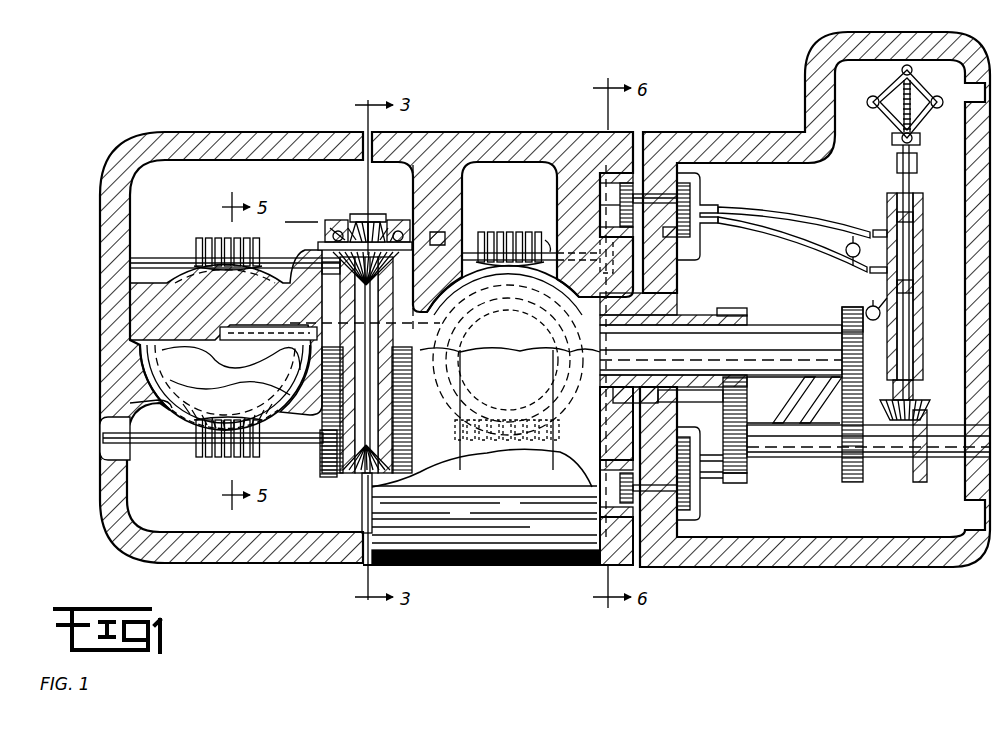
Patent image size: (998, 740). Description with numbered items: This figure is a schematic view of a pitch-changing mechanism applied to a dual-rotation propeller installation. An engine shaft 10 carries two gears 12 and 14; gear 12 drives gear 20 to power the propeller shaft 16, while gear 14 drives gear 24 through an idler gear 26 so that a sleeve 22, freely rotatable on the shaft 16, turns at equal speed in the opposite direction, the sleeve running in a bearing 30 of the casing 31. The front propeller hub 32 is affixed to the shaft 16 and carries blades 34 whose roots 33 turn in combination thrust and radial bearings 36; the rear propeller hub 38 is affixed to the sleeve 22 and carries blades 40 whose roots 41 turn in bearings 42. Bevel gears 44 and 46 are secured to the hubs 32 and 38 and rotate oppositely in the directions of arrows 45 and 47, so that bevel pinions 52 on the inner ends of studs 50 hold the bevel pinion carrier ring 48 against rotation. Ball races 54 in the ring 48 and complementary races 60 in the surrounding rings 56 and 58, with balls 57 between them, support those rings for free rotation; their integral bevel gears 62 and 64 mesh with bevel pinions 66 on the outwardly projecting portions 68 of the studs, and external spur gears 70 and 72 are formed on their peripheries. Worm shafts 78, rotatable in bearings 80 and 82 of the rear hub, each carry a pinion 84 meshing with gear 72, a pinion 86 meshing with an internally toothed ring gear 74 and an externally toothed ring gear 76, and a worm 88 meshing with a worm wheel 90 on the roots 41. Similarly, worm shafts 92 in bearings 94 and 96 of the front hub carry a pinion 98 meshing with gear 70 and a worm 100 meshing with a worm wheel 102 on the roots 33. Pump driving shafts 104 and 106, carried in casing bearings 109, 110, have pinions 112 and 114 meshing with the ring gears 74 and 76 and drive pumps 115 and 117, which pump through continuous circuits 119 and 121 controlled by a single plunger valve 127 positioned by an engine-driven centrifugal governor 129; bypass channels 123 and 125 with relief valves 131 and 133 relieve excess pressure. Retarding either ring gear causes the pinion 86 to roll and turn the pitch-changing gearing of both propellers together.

The engine shaft 10 is at (925, 465).
The gear 12 is at (850, 482).
The gear 14 is at (738, 475).
The propeller shaft 16 is at (788, 328).
The gear 20 is at (850, 308).
The sleeve 22 is at (737, 315).
The gear 24 is at (748, 312).
The idler gear 26 is at (748, 395).
The bearing 30 is at (677, 298).
The casing 31 is at (810, 567).
The front propeller hub 32 is at (229, 134).
The roots 33 is at (163, 356).
The blades 34 is at (232, 381).
The combination thrust and radial bearings 36 is at (170, 418).
The rear propeller hub 38 is at (540, 133).
The blades 40 is at (525, 380).
The roots 41 is at (524, 400).
The combination thrust and radial bearings 42 is at (450, 415).
The bevel gear 44 is at (366, 392).
The arrow 45 is at (286, 148).
The bevel gear 46 is at (366, 365).
The arrow 47 is at (495, 150).
The bevel pinion carrier ring 48 is at (325, 248).
The studs 50 is at (362, 225).
The bevel pinions 52 is at (340, 270).
The ball races 54 is at (333, 238).
The ring 56 is at (335, 235).
The balls 57 is at (333, 230).
The ring 58 is at (435, 235).
The ball race 60 is at (350, 222).
The bevel gear 62 is at (370, 232).
The bevel gear 64 is at (388, 222).
The bevel pinions 66 is at (385, 232).
The outwardly projecting portion 68 is at (365, 222).
The external spur gear 70 is at (330, 225).
The external spur gear 72 is at (410, 225).
The internally toothed ring gear 74 is at (598, 173).
The externally toothed ring gear 76 is at (622, 214).
The worm shafts 78 is at (553, 252).
The bearing 80 is at (464, 240).
The bearing 82 is at (552, 245).
The pinion 84 is at (431, 247).
The pinion 86 is at (600, 268).
The worm 88 is at (535, 238).
The worm wheel 90 is at (518, 290).
The worm shafts 92 is at (165, 445).
The bearing 94 is at (132, 455).
The bearing 96 is at (303, 475).
The pinion 98 is at (318, 452).
The worm 100 is at (207, 238).
The worm wheel 102 is at (258, 404).
The pump driving shaft 104 is at (640, 198).
The pump driving shaft 106 is at (680, 495).
The gear 109 is at (678, 215).
The bearing 110 is at (677, 460).
The pinion 112 is at (622, 196).
The pinion 114 is at (595, 495).
The pump 115 is at (700, 192).
The pump 117 is at (698, 510).
The continuous circuit 119 is at (792, 212).
The continuous circuit 121 is at (812, 395).
The bypass channel 123 is at (832, 260).
The bypass channel 125 is at (875, 345).
The plunger valve 127 is at (932, 268).
The engine-driven centrifugal governor 129 is at (942, 97).
The relief valve 131 is at (846, 248).
The relief valve 133 is at (880, 292).